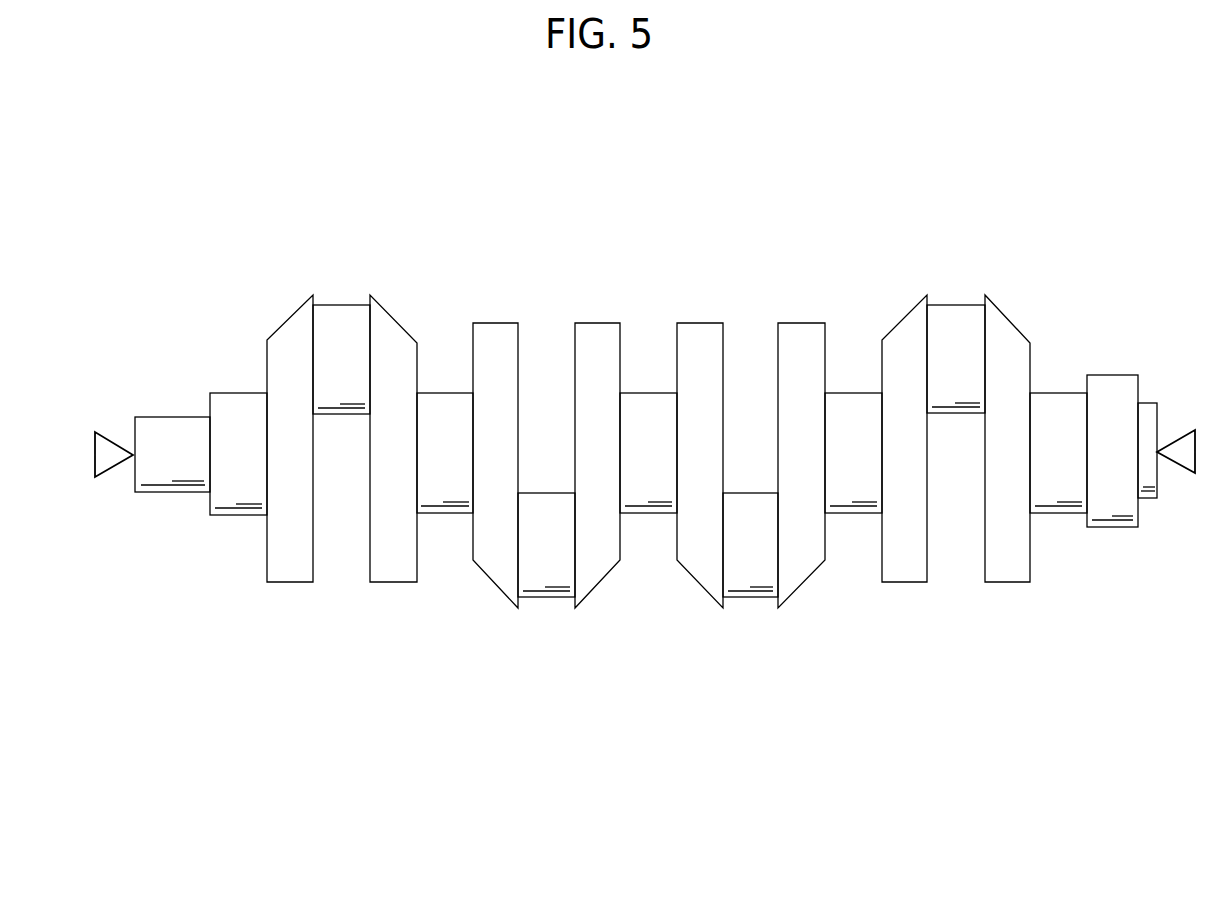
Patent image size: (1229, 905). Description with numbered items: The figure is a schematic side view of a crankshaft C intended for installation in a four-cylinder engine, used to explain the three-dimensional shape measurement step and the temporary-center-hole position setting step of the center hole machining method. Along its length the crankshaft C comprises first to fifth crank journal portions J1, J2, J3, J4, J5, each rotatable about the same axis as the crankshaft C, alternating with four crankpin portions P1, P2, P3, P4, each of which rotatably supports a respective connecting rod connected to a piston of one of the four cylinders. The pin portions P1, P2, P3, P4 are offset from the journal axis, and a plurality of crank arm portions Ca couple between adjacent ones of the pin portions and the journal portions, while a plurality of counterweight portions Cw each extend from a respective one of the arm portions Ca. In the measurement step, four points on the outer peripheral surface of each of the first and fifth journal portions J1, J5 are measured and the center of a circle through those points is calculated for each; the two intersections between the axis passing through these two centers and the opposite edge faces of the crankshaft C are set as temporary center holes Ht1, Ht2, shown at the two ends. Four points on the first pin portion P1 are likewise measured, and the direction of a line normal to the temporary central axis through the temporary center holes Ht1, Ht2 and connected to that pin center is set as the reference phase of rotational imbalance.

The crankshaft C is at (1115, 330).
The first crank journal portion J1 is at (240, 517).
The second crank journal portion J2 is at (448, 515).
The third crank journal portion J3 is at (651, 515).
The fourth crank journal portion J4 is at (857, 515).
The fifth crank journal portion J5 is at (1063, 515).
The first crankpin portion P1 is at (336, 304).
The second crankpin portion P2 is at (546, 599).
The third crankpin portion P3 is at (753, 599).
The fourth crankpin portion P4 is at (955, 304).
The crank arm portion Ca is at (290, 329).
The counterweight portion Cw is at (290, 584).
The temporary center hole Ht1 is at (129, 455).
The temporary center hole Ht2 is at (1161, 457).